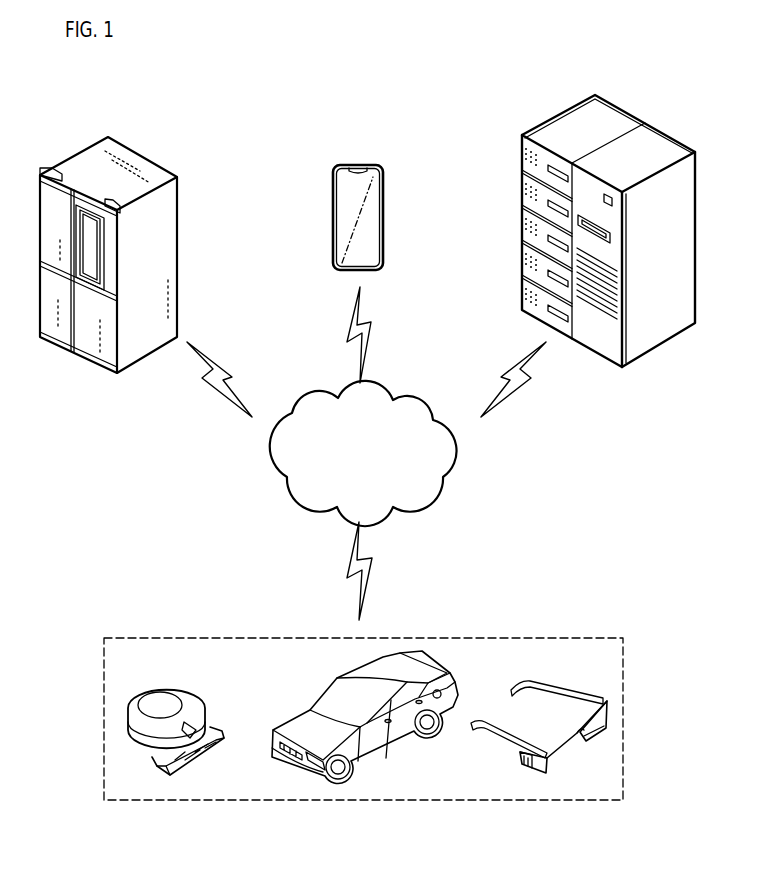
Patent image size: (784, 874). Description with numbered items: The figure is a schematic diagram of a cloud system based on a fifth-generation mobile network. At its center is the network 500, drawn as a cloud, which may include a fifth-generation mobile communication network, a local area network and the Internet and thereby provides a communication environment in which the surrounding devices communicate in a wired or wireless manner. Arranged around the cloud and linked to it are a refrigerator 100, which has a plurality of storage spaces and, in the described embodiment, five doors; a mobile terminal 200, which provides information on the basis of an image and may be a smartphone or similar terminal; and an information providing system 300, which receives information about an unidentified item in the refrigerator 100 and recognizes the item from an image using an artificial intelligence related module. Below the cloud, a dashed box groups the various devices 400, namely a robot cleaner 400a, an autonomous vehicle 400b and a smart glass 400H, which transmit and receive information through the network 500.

The refrigerator 100 is at (145, 157).
The mobile terminal 200 is at (370, 165).
The information providing system 300 is at (663, 135).
The various devices 400 is at (535, 637).
The robot cleaner 400a is at (168, 777).
The autonomous vehicle 400b is at (317, 777).
The smart glass 400H is at (525, 767).
The 5G network 500 is at (425, 398).